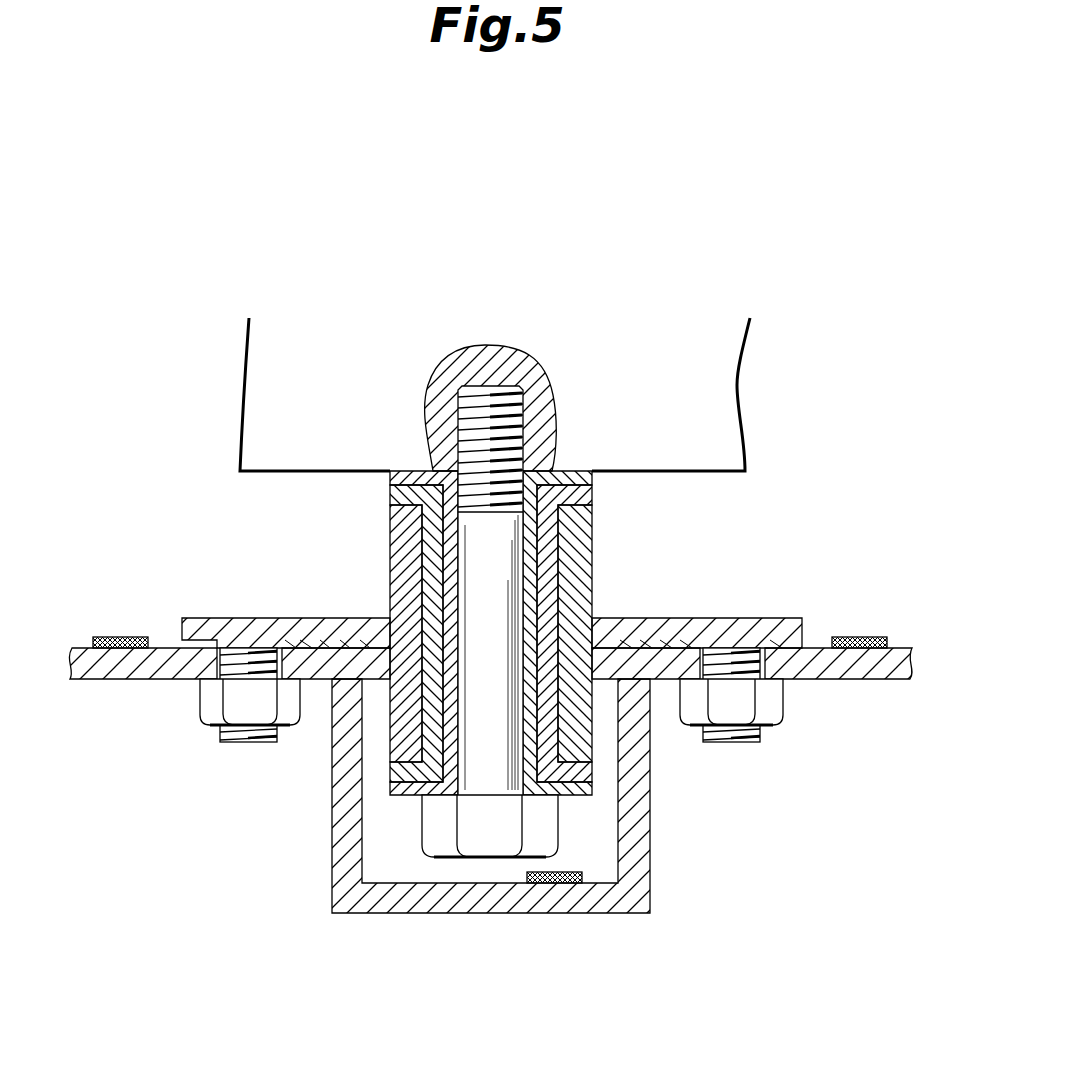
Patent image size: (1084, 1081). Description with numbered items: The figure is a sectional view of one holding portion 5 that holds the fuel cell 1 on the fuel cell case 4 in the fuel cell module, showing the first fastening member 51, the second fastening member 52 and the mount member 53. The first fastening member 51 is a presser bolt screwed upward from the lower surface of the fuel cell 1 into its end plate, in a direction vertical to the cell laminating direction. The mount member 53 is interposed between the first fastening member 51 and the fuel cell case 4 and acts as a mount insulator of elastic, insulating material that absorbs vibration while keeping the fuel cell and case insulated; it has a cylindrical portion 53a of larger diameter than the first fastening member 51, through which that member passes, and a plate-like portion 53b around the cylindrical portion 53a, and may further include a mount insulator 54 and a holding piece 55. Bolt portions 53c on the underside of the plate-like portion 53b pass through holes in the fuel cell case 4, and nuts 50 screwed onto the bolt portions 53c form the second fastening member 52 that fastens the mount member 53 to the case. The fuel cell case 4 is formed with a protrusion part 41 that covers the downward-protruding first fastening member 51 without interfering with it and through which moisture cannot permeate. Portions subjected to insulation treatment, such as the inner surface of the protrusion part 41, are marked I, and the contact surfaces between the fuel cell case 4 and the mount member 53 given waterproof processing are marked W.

The fuel cell 1 is at (722, 417).
The fuel cell case 4 is at (72, 648).
The holding portion 5 is at (322, 526).
The protrusion part 41 is at (638, 816).
The nut 50 is at (208, 702).
The first fastening member 51 is at (475, 398).
The second fastening member 52 is at (118, 735).
The mount member 53 is at (697, 515).
The cylindrical portion 53a is at (597, 541).
The plate-like portion 53b is at (650, 618).
The bolt portion 53c is at (240, 738).
The mount insulator 54 is at (580, 472).
The holding piece 55 is at (596, 491).
The insulation treatment portion I is at (117, 634).
The waterproof processing portion W is at (312, 634).